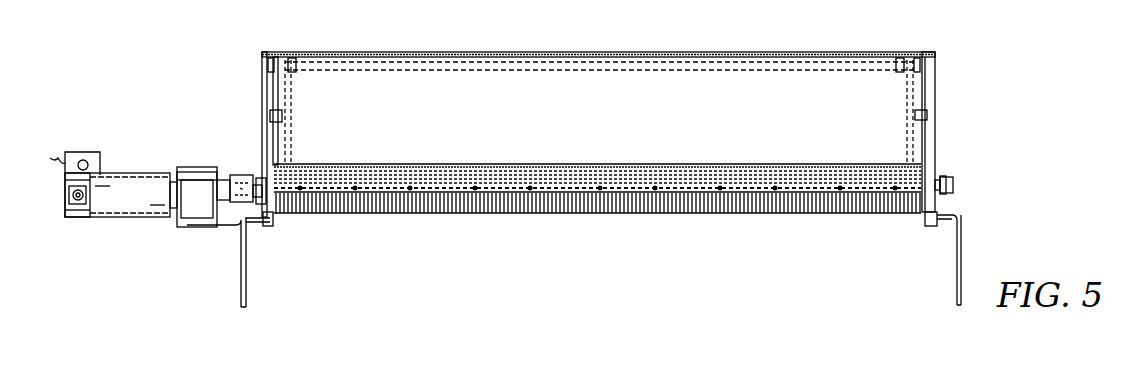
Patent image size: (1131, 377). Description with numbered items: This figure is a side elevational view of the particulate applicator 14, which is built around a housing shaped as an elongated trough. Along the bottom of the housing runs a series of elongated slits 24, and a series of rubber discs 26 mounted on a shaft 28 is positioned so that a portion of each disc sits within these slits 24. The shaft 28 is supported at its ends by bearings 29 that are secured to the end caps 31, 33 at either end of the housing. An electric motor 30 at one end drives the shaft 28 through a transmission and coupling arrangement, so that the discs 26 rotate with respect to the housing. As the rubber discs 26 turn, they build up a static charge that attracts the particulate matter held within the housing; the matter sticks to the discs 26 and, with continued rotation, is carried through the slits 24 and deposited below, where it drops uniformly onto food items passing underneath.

The particulate applicator 14 is at (978, 112).
The elongated slits 24 is at (773, 214).
The rubber discs 26 is at (663, 173).
The shaft 28 is at (946, 178).
The bearings 29 is at (258, 180).
The electric motor 30 is at (132, 196).
The end cap 31 is at (932, 92).
The end cap 33 is at (268, 88).